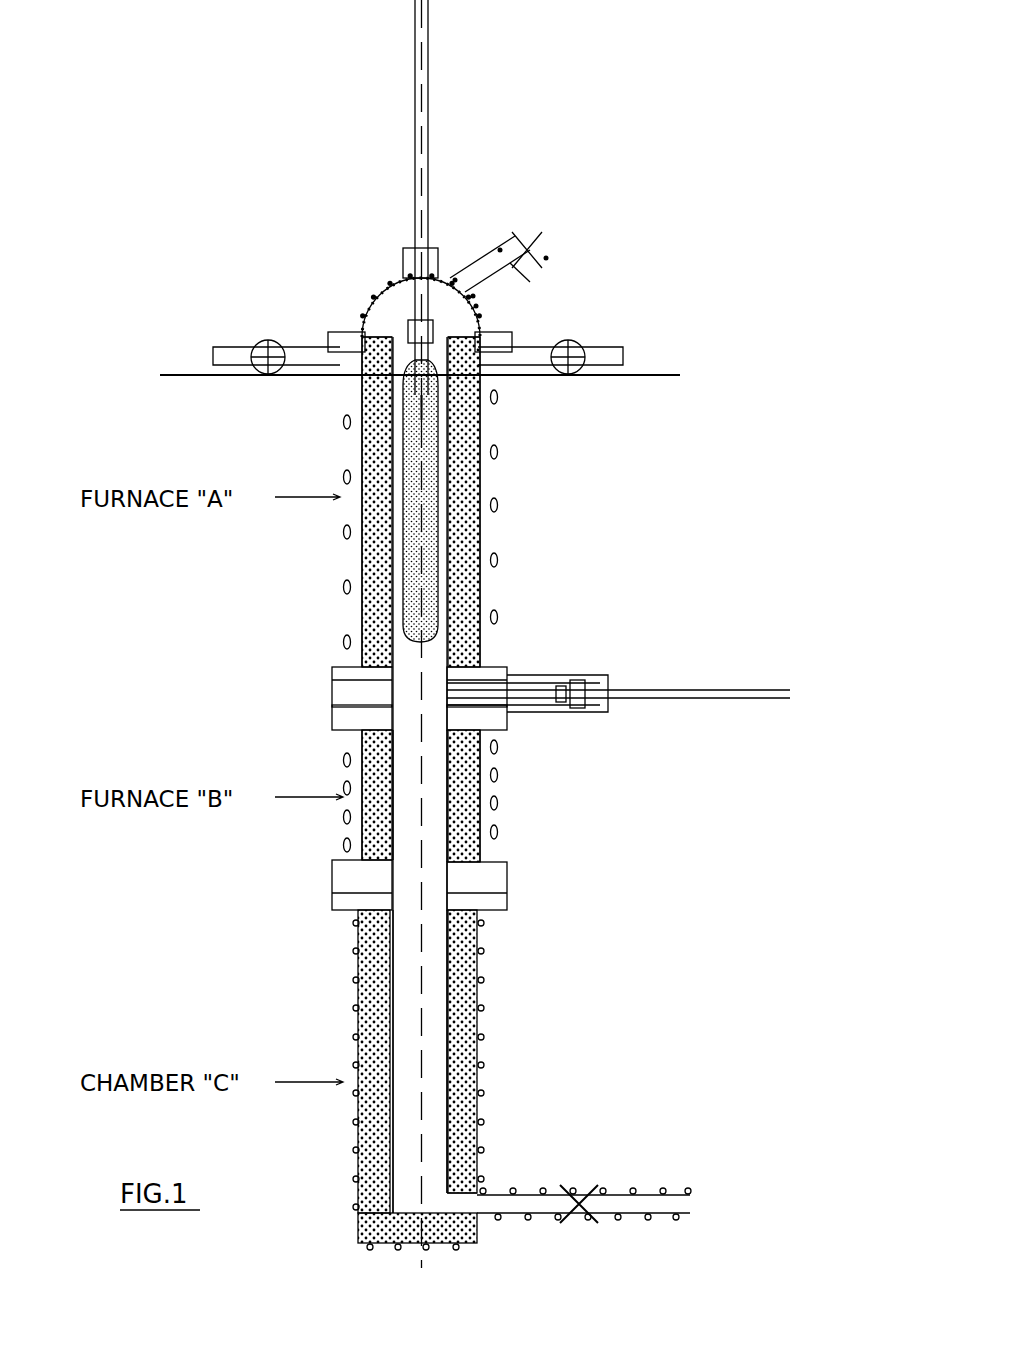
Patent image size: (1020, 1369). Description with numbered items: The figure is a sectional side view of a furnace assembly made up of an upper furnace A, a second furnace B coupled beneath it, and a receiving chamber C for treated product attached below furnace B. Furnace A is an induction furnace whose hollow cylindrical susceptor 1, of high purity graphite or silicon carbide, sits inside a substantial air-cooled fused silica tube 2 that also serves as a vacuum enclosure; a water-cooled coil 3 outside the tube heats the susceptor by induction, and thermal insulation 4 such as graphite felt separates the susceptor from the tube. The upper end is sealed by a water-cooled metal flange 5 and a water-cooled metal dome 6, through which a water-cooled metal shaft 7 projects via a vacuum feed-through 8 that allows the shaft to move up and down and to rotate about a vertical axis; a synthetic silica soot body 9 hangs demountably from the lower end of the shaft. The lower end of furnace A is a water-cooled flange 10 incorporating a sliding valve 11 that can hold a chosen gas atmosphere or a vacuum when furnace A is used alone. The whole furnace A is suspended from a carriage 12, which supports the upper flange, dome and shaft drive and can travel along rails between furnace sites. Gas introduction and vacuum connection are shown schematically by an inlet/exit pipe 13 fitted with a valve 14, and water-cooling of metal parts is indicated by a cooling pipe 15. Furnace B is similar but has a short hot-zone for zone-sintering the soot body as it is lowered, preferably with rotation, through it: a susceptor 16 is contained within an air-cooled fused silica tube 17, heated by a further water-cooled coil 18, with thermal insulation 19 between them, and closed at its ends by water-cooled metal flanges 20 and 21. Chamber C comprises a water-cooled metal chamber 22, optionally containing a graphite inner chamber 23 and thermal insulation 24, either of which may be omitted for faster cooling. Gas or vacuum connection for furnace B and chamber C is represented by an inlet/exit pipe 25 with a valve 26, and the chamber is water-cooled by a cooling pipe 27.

The hollow cylindrical susceptor 1 is at (480, 440).
The fused silica tube 2 is at (482, 480).
The water-cooled coil 3 is at (502, 505).
The thermal insulation 4 is at (482, 543).
The water-cooled metal flange 5 is at (513, 340).
The water-cooled metal dome 6 is at (485, 315).
The water-cooled metal shaft 7 is at (428, 143).
The vacuum feed-through 8 is at (437, 253).
The synthetic silica soot body 9 is at (425, 625).
The water-cooled flange 10 is at (497, 667).
The sliding valve 11 is at (607, 675).
The carriage 12 is at (613, 357).
The inlet/exit pipe 13 is at (530, 282).
The valve 14 is at (545, 238).
The cooling pipe 15 is at (500, 240).
The susceptor 16 is at (455, 745).
The fused silica tube 17 is at (483, 783).
The water-cooled coil 18 is at (500, 837).
The thermal insulation 19 is at (465, 845).
The water-cooled metal flange 20 is at (497, 720).
The water-cooled metal flange 21 is at (480, 885).
The water-cooled metal chamber 22 is at (485, 1003).
The inner chamber 23 is at (482, 1075).
The thermal insulation 24 is at (462, 1130).
The inlet/exit pipe 25 is at (520, 1195).
The valve 26 is at (600, 1185).
The cooling pipe 27 is at (458, 1248).